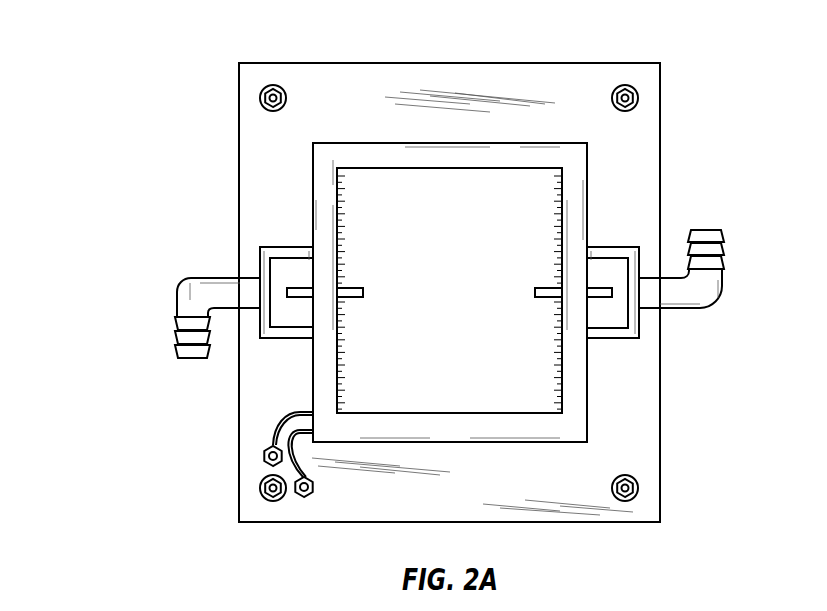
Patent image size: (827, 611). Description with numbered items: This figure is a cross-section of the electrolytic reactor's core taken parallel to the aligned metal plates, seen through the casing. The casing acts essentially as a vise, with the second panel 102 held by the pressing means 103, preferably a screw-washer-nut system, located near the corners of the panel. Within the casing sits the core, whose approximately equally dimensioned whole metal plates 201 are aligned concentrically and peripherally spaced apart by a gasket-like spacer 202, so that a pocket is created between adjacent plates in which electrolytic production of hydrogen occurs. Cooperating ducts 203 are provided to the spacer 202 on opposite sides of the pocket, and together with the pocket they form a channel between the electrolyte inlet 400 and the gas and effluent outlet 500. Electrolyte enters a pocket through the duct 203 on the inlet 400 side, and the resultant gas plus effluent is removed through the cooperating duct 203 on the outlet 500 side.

The second panel 102 is at (646, 171).
The pressing means 103 is at (266, 87).
The metal plate 201 is at (472, 276).
The spacer 202 is at (405, 150).
The duct 203 is at (351, 298).
The electrolyte inlet 400 is at (710, 288).
The gas and effluent outlet 500 is at (185, 301).